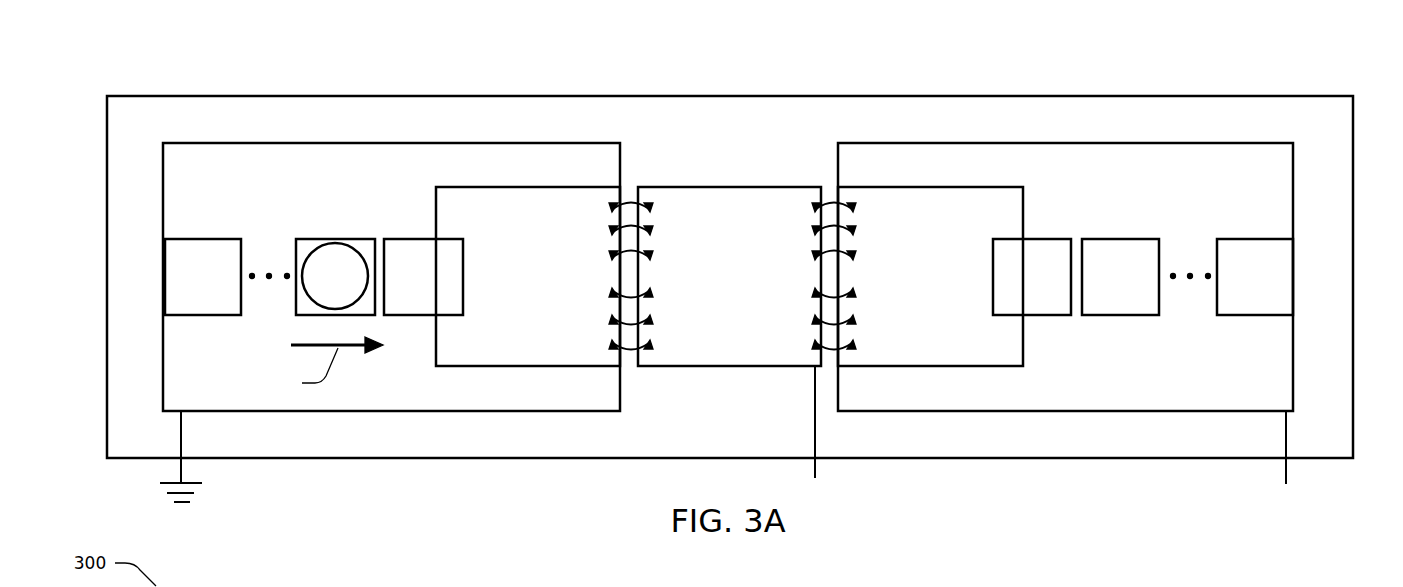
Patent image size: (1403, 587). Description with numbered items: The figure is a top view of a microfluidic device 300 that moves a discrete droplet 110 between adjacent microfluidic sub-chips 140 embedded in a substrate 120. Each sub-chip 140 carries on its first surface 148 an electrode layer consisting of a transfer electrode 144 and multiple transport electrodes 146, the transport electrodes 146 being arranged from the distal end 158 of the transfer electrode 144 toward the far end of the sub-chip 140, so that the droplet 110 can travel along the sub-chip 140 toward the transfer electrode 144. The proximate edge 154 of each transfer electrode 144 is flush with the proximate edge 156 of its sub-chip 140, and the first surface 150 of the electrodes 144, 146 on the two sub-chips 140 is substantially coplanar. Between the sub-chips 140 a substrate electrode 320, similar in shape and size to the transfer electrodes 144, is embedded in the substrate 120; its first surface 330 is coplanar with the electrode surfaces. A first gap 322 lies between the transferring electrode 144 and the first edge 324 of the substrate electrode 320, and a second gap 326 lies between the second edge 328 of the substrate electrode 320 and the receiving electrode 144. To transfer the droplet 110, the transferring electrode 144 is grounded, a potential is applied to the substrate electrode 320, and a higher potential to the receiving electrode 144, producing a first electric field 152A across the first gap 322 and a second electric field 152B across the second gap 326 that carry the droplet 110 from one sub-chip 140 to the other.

The microfluidic device 300 is at (170, 58).
The substrate 120 is at (107, 132).
The microfluidic sub-chip 140 is at (362, 142).
The transfer electrode 144 is at (505, 186).
The transport electrode 146 is at (188, 239).
The droplet 110 is at (312, 302).
The first surface 148 is at (1205, 163).
The first surface 150 is at (466, 345).
The first electric field 152A is at (630, 197).
The second electric field 152B is at (838, 192).
The proximate edge 154 is at (620, 281).
The proximate edge 156 is at (622, 383).
The distal end 158 is at (436, 189).
The substrate electrode 320 is at (700, 367).
The first gap 322 is at (628, 380).
The first edge 324 is at (638, 282).
The second gap 326 is at (824, 175).
The second edge 328 is at (822, 268).
The first surface 330 is at (753, 200).